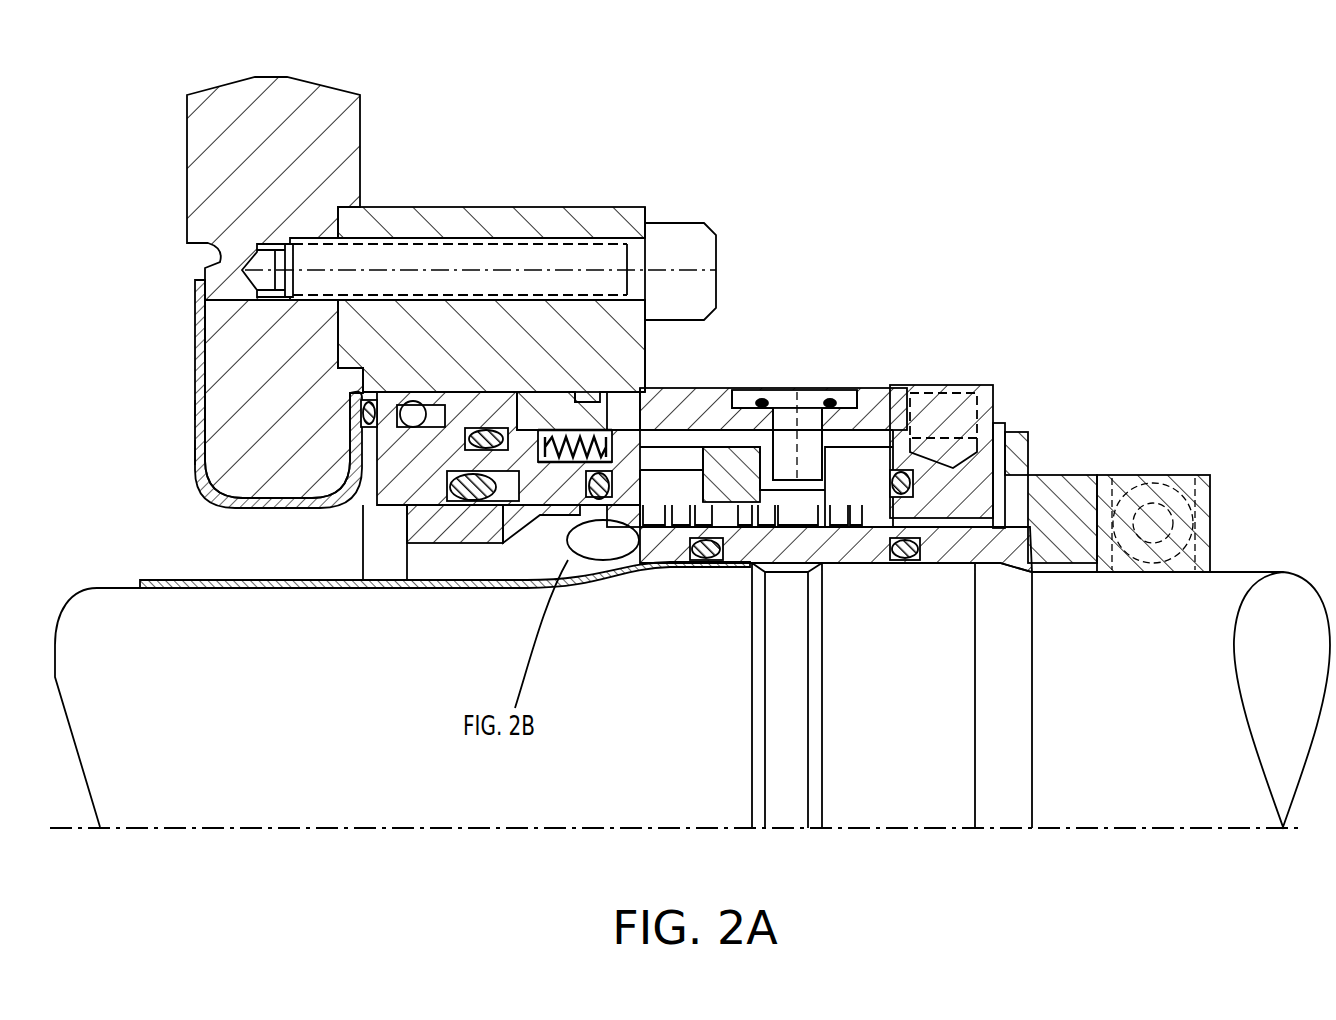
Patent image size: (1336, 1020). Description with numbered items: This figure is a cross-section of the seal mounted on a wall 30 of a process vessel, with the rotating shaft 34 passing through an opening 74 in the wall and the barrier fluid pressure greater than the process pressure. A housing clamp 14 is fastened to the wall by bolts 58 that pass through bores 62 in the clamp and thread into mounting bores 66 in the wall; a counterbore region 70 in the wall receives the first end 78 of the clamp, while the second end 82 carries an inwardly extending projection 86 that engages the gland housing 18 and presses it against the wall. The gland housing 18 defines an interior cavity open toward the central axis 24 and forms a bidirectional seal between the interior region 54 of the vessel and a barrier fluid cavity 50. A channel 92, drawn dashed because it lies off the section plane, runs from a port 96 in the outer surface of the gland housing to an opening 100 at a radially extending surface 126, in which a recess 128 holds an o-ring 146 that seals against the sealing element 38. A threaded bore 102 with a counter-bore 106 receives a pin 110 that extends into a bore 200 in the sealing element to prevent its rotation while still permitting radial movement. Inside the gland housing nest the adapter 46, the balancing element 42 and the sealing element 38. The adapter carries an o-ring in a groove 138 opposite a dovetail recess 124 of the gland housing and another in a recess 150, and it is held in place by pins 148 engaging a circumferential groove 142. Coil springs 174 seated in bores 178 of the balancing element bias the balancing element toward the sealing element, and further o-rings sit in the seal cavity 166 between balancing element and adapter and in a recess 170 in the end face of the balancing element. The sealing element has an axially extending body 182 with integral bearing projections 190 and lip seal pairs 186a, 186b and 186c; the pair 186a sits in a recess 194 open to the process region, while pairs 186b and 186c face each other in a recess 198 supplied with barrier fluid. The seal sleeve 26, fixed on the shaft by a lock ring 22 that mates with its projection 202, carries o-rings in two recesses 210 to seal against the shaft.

The housing clamp 14 is at (517, 210).
The gland housing 18 is at (872, 392).
The lock ring 22 is at (1137, 475).
The central axis 24 is at (78, 827).
The seal sleeve 26 is at (1085, 573).
The wall of process vessel 30 is at (187, 182).
The shaft 34 is at (56, 678).
The sealing element 38 is at (727, 392).
The balancing element 42 is at (407, 525).
The adapter 46 is at (362, 488).
The barrier fluid cavity 50 is at (703, 392).
The interior region of process vessel 54 is at (50, 491).
The bolts 58 is at (672, 223).
The bores 62 is at (497, 238).
The mounting bores 66 is at (306, 236).
The counterbore region 70 is at (352, 225).
The opening 74 is at (170, 560).
The first end of housing clamp 78 is at (340, 336).
The second end of housing clamp 82 is at (648, 222).
The projection 86 is at (655, 390).
The channel 92 is at (915, 452).
The port 96 is at (995, 423).
The opening 100 is at (876, 388).
The threaded bore 102 is at (858, 390).
The counter-bore 106 is at (745, 390).
The pin 110 is at (746, 387).
The dovetail recess 124 is at (352, 392).
The radially extending surface 126 is at (987, 545).
The recess 128 is at (918, 486).
The groove 138 is at (345, 440).
The circumferential groove 142 is at (352, 448).
The o-ring 146 is at (362, 410).
The pins 148 is at (408, 404).
The recess 150 is at (452, 490).
The seal cavity 166 is at (538, 512).
The recess 170 is at (596, 490).
The coil springs 174 is at (547, 425).
The bores 178 is at (576, 410).
The body 182 is at (672, 472).
The lip seal pair 186a is at (648, 560).
The lip seal pair 186b is at (738, 560).
The lip seal pair 186c is at (850, 562).
The bearing projections 190 is at (628, 566).
The recess 194 is at (645, 560).
The recess 198 is at (812, 562).
The bore 200 is at (820, 455).
The projection 202 is at (1077, 475).
The recesses 210 is at (728, 533).